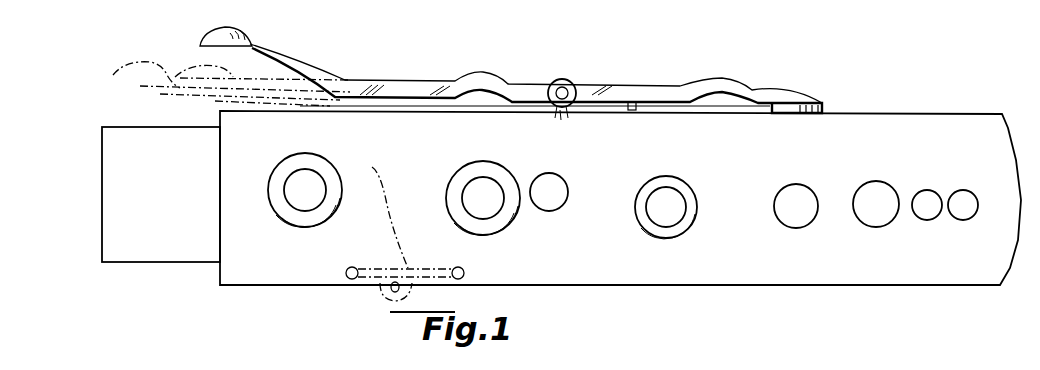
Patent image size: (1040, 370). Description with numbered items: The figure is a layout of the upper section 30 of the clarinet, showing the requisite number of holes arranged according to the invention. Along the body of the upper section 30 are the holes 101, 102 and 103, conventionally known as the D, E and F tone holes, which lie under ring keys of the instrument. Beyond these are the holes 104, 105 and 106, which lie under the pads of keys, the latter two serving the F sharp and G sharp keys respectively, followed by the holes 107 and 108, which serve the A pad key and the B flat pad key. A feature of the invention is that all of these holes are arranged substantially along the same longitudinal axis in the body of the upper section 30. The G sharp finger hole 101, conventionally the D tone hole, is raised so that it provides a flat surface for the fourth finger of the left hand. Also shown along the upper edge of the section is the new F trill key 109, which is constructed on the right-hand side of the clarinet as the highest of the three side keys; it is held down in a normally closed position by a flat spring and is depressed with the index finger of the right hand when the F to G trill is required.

The upper section 30 is at (642, 285).
The D tone hole 101 is at (312, 226).
The E tone hole 102 is at (486, 222).
The F tone hole 103 is at (680, 190).
The hole 104 is at (566, 188).
The hole 105 is at (810, 185).
The hole 106 is at (877, 181).
The hole 107 is at (932, 220).
The hole 108 is at (966, 220).
The F trill key 109 is at (503, 81).